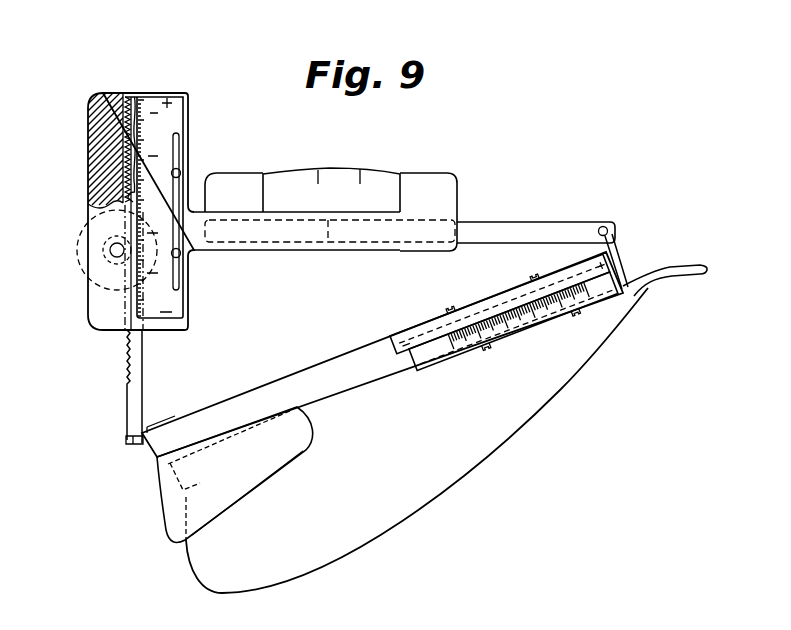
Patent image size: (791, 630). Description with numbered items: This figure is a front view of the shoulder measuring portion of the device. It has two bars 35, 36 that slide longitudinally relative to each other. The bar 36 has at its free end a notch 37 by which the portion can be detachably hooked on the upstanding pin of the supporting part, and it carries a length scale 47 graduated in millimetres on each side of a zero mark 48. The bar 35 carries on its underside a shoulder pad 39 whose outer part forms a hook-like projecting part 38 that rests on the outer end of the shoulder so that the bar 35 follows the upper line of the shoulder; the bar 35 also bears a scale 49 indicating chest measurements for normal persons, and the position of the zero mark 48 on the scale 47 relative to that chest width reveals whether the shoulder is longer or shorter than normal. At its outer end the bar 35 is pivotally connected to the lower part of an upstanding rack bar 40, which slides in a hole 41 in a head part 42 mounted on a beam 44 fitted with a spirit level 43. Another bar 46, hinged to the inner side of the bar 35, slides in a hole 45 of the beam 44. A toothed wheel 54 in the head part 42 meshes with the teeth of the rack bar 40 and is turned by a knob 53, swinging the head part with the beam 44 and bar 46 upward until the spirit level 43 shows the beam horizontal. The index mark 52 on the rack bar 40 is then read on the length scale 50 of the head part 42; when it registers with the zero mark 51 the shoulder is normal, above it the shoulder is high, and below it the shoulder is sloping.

The bar 35 is at (331, 357).
The bar 36 is at (645, 282).
The notch 37 is at (692, 266).
The hook-like projecting part 38 is at (163, 492).
The shoulder pad 39 is at (200, 578).
The rack bar 40 is at (132, 388).
The hole 41 is at (127, 96).
The head part 42 is at (95, 129).
The spirit level 43 is at (343, 172).
The beam 44 is at (440, 210).
The hole 45 is at (230, 226).
The bar 46 is at (497, 222).
The length scale 47 is at (528, 356).
The zero mark 48 is at (541, 373).
The scale 49 is at (494, 288).
The length scale 50 is at (170, 130).
The zero mark 51 is at (158, 190).
The index mark 52 is at (117, 180).
The knob 53 is at (100, 233).
The toothed wheel 54 is at (112, 258).